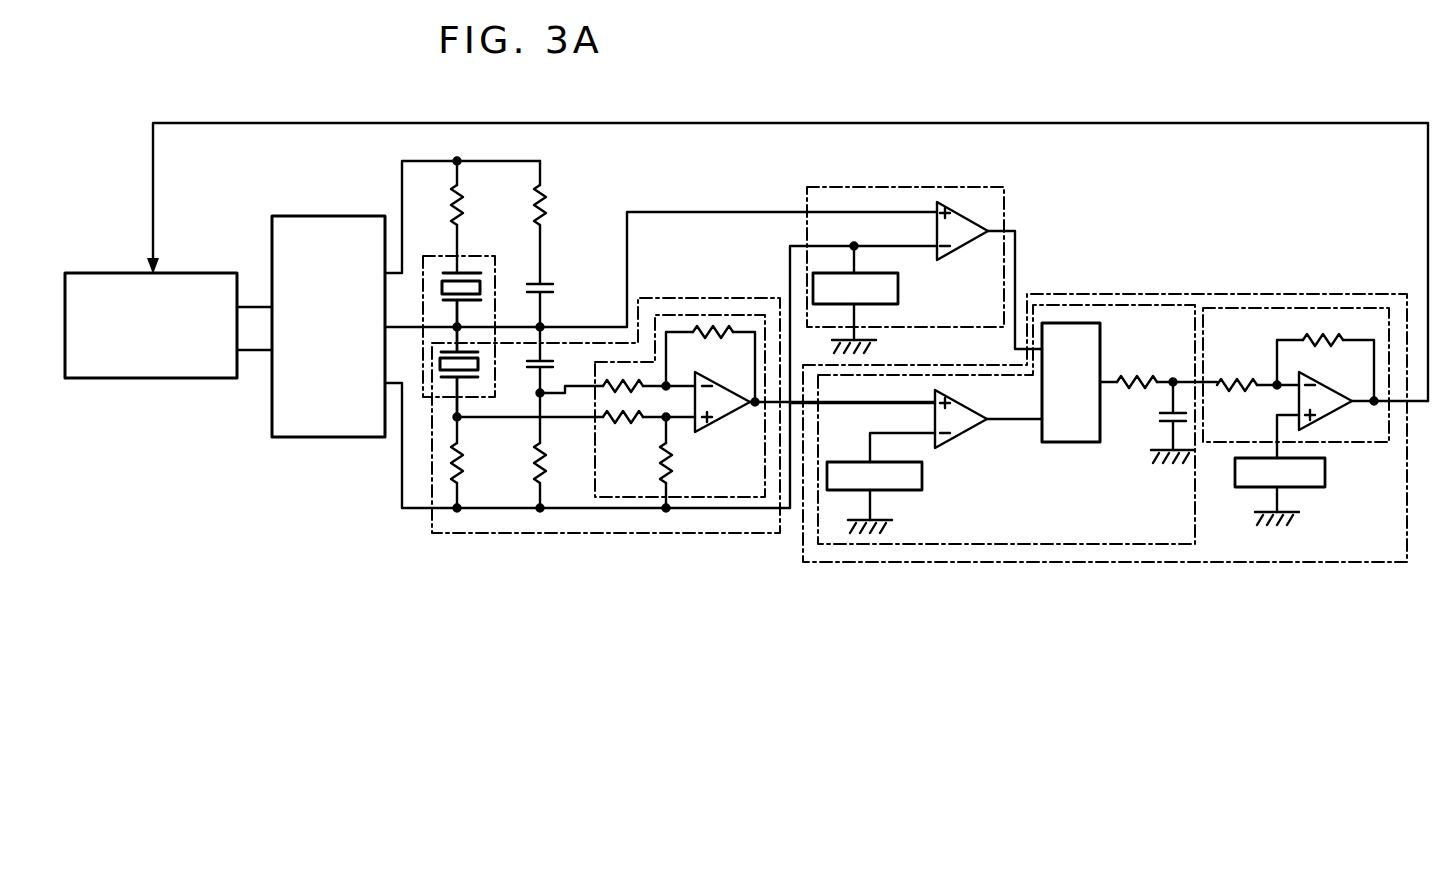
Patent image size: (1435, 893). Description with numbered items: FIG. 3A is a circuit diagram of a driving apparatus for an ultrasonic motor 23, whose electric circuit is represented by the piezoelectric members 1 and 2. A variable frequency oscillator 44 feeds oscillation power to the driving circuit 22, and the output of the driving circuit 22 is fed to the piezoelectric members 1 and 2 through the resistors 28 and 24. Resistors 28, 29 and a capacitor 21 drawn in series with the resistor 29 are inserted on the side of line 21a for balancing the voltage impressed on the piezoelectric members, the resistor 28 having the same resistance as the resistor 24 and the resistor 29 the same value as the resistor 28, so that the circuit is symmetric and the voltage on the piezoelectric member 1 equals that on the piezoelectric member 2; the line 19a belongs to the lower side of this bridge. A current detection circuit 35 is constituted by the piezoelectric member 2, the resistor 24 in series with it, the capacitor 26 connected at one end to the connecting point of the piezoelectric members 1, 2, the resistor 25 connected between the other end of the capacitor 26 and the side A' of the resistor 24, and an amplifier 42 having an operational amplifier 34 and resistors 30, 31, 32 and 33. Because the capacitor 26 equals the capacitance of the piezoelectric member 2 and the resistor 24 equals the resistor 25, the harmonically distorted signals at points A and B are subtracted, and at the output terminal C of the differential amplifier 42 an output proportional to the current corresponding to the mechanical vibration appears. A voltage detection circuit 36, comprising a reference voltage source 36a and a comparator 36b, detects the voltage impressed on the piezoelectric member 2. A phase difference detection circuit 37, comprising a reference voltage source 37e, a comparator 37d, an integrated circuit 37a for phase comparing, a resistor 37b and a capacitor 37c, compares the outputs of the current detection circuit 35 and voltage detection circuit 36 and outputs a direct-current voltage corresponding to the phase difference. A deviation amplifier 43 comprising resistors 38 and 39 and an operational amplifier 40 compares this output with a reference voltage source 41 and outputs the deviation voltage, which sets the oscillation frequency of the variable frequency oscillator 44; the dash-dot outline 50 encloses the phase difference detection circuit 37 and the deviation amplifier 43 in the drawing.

The piezoelectric member 1 is at (481, 286).
The piezoelectric member 2 is at (478, 360).
The line 19a is at (497, 510).
The capacitor 21 is at (553, 292).
The line 21a is at (496, 161).
The driving circuit 22 is at (344, 216).
The ultrasonic motor 23 is at (468, 257).
The resistor 24 is at (463, 470).
The resistor 25 is at (546, 470).
The capacitor 26 is at (553, 360).
The resistor 28 is at (463, 210).
The resistor 29 is at (546, 210).
The resistor 30 is at (626, 379).
The resistor 31 is at (620, 423).
The resistor 32 is at (713, 334).
The resistor 33 is at (671, 470).
The operational amplifier 34 is at (728, 413).
The current detection circuit 35 is at (605, 534).
The voltage detection circuit 36 is at (858, 187).
The reference voltage source 36a is at (898, 288).
The comparator 36b is at (962, 212).
The phase difference detection circuit 37 is at (1125, 307).
The integrated circuit 37a is at (1065, 442).
The resistor 37b is at (1133, 376).
The capacitor 37c is at (1158, 416).
The comparator 37d is at (965, 433).
The reference voltage source 37e is at (922, 478).
The resistor 38 is at (1229, 380).
The resistor 39 is at (1328, 334).
The operational amplifier 40 is at (1334, 401).
The reference voltage source 41 is at (1325, 475).
The amplifier 42 is at (725, 500).
The deviation amplifier 43 is at (1288, 308).
The variable frequency oscillator 44 is at (202, 273).
The control circuit 50 is at (1100, 563).
The point A is at (477, 432).
The opposite side A' of resistor 24 A' is at (445, 545).
The point B is at (547, 388).
The output terminal C is at (836, 404).